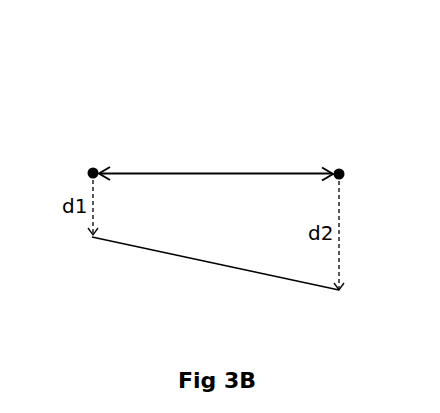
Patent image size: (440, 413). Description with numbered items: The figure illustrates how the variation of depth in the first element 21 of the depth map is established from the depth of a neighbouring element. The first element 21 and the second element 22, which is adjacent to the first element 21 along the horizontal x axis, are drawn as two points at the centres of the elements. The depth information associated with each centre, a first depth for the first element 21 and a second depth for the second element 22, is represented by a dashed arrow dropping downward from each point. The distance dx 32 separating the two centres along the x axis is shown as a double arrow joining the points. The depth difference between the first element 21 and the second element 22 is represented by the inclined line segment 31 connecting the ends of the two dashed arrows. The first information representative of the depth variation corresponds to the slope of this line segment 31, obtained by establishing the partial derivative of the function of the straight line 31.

The first element 21 is at (90, 169).
The second element 22 is at (336, 170).
The line segment 31 is at (170, 254).
The distance dx 32 is at (212, 133).